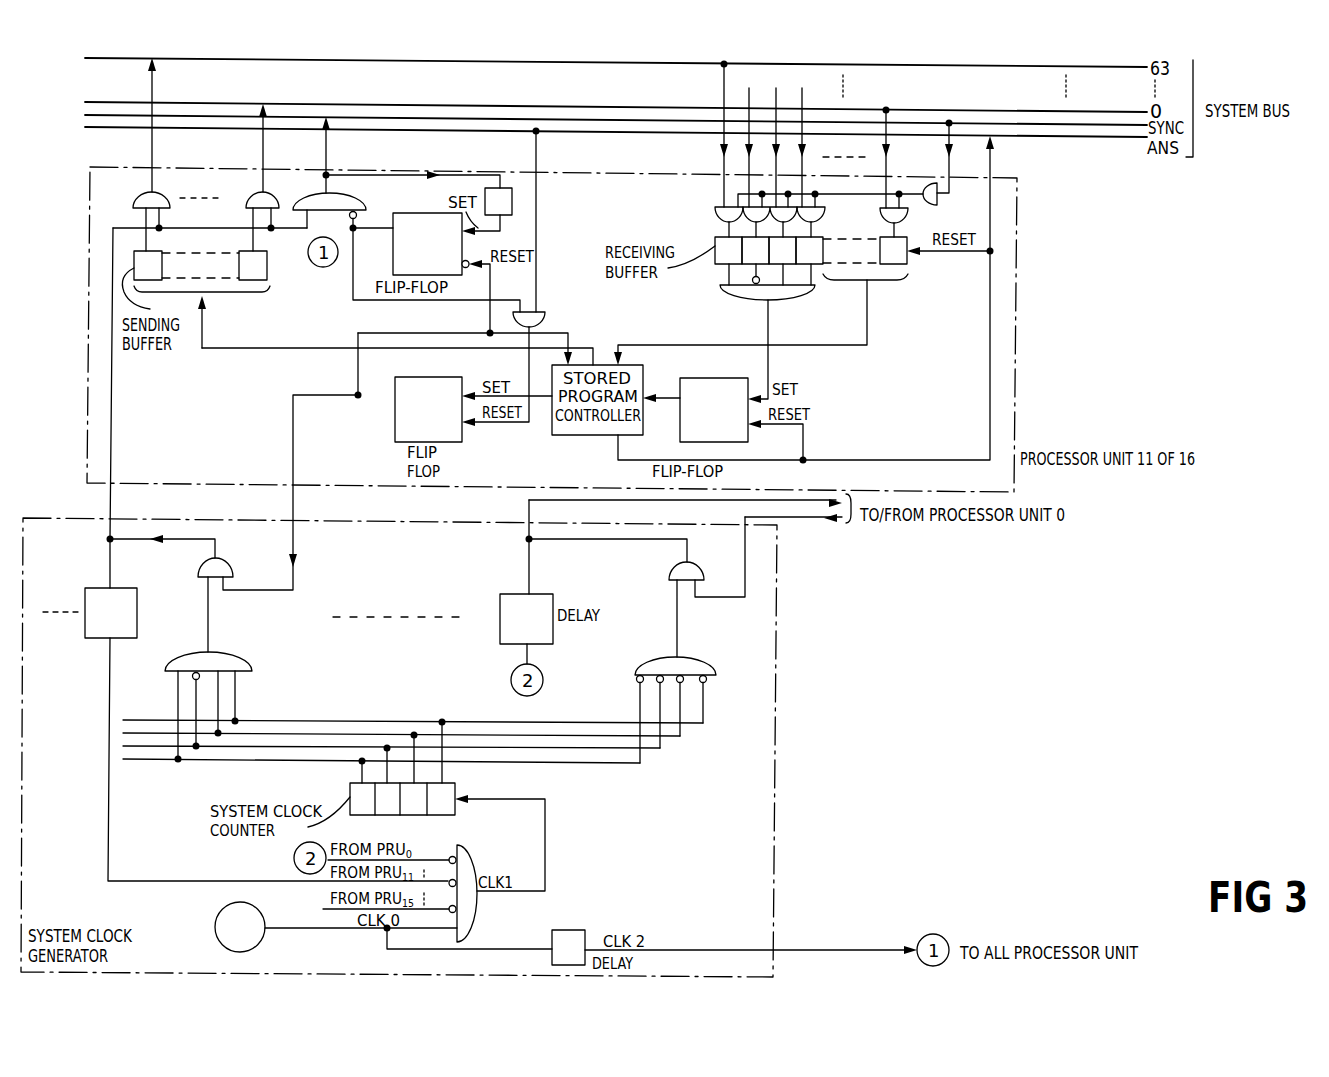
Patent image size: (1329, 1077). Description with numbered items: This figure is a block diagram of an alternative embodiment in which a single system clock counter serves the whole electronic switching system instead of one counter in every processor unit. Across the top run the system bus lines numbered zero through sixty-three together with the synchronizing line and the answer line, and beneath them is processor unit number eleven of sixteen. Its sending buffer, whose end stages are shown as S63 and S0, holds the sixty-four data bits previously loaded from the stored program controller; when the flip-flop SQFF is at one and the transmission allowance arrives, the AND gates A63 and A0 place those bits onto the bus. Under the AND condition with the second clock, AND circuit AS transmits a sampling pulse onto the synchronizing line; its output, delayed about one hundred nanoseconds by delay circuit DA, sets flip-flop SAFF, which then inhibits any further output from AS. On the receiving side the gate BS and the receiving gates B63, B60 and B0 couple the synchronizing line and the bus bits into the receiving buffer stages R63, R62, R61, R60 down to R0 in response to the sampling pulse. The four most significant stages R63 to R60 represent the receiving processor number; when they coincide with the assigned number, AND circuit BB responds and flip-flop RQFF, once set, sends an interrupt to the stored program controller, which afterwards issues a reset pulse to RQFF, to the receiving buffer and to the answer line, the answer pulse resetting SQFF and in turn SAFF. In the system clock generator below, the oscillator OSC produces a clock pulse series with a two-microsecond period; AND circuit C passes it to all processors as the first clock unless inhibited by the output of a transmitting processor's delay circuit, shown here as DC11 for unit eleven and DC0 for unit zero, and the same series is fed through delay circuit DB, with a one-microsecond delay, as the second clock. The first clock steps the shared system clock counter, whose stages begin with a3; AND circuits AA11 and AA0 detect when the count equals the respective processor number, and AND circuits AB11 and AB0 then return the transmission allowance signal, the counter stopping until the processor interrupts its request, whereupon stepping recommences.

The sending AND gate bit 63 A63 is at (139, 154).
The sending AND gate bit 0 A0 is at (252, 177).
The AND circuit AS is at (343, 172).
The delay circuit DA is at (419, 203).
The flip-flop SAFF is at (443, 275).
The flip-flop SQFF is at (473, 409).
The flip-flop RQFF is at (741, 419).
The sending buffer register bit 63 S63 is at (148, 265).
The sending buffer register bit 0 S0 is at (253, 265).
The sync receiving gate BS is at (848, 200).
The receiving AND gate bit 63 B63 is at (715, 214).
The receiving AND gate bit 60 B60 is at (832, 206).
The receiving AND gate bit 0 B0 is at (904, 221).
The receiving buffer stage R63 is at (728, 250).
The receiving buffer stage R62 is at (755, 250).
The receiving buffer stage R61 is at (782, 250).
The receiving buffer stage R60 is at (809, 250).
The receiving buffer stage R0 is at (935, 250).
The AND circuit BB is at (766, 333).
The delay circuit 0 DC0 is at (526, 582).
The delay circuit 11 DC11 is at (266, 554).
The AND gate B0 AB0 is at (637, 587).
The AND gate B11 AB11 is at (193, 593).
The AND gate A0 AA0 is at (692, 705).
The AND gate A11 AA11 is at (229, 702).
The system clock counter a3 is at (402, 767).
The AND circuit C is at (374, 885).
The clock generator OSC is at (240, 927).
The delay circuit DB is at (734, 947).